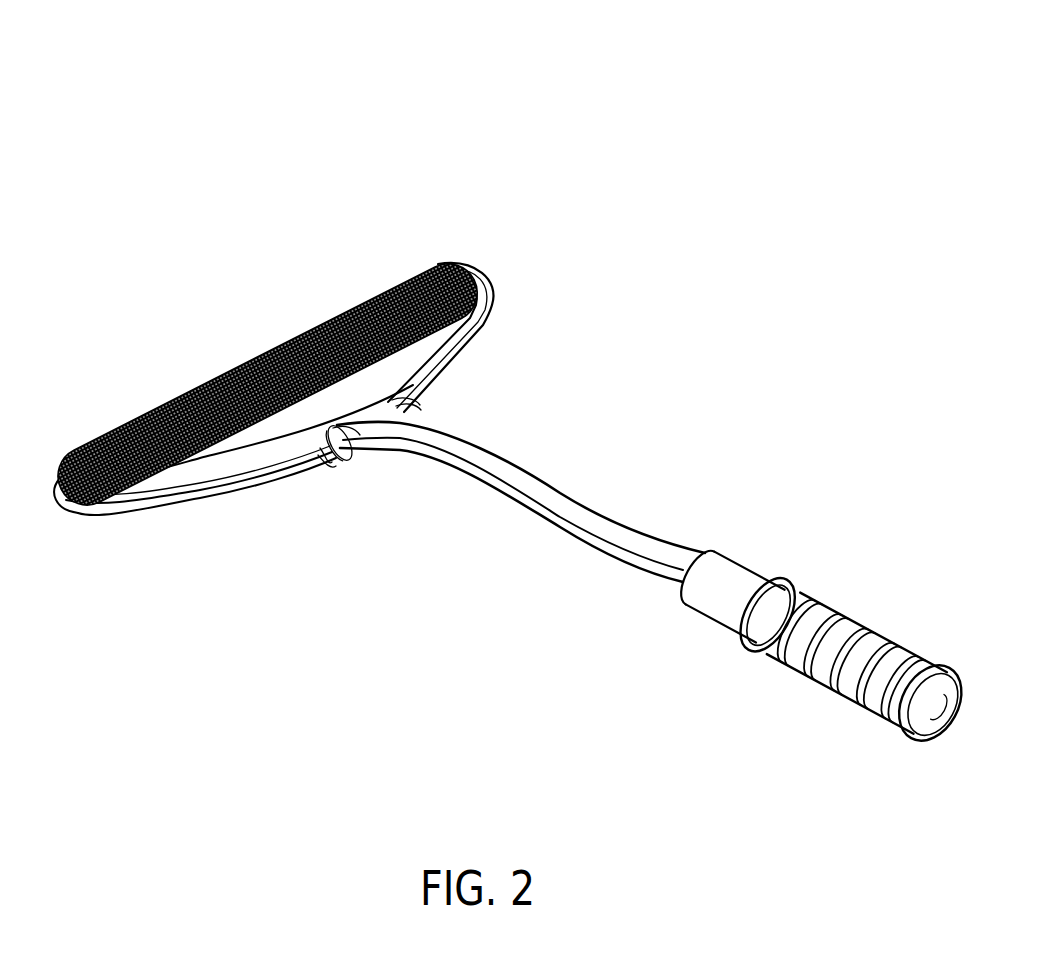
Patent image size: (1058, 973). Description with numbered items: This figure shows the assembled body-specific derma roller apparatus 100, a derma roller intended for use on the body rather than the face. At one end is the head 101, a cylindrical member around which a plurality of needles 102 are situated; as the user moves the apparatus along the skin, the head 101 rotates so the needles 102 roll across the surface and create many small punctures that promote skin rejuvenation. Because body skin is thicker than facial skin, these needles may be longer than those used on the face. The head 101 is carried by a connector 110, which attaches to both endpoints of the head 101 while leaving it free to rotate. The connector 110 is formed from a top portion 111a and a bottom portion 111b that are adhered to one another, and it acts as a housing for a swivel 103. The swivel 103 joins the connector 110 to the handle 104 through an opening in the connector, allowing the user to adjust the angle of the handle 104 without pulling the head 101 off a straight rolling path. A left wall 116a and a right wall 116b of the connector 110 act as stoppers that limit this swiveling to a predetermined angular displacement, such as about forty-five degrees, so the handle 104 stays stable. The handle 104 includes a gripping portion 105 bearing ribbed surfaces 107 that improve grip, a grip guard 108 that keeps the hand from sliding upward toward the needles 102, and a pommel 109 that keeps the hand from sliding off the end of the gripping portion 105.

The body-specific derma roller apparatus 100 is at (797, 124).
The head 101 is at (449, 259).
The plurality of needles 102 is at (258, 354).
The swivel 103 is at (362, 458).
The handle 104 is at (756, 487).
The gripping portion 105 is at (790, 700).
The ribbed surfaces 107 is at (835, 613).
The grip guard 108 is at (782, 580).
The pommel 109 is at (928, 713).
The connector 110 is at (167, 523).
The top portion 111a is at (482, 297).
The bottom portion 111b is at (487, 333).
The left wall 116a is at (322, 470).
The right wall 116b is at (407, 407).